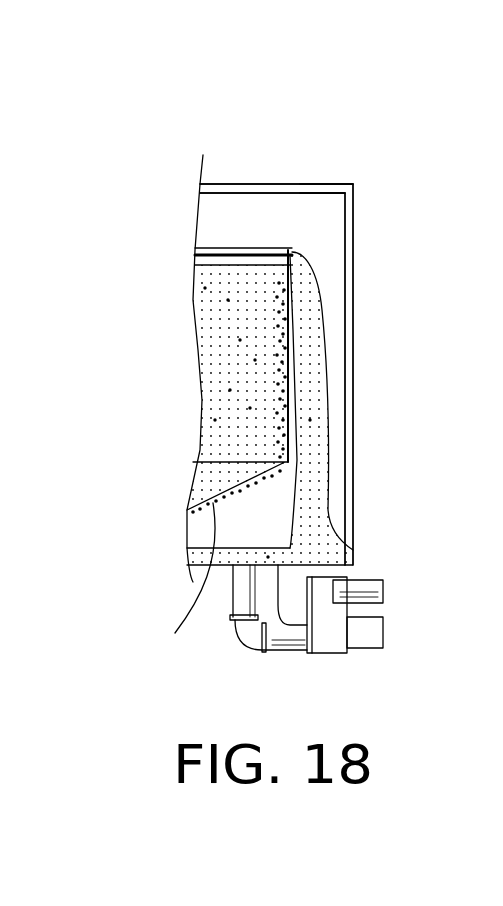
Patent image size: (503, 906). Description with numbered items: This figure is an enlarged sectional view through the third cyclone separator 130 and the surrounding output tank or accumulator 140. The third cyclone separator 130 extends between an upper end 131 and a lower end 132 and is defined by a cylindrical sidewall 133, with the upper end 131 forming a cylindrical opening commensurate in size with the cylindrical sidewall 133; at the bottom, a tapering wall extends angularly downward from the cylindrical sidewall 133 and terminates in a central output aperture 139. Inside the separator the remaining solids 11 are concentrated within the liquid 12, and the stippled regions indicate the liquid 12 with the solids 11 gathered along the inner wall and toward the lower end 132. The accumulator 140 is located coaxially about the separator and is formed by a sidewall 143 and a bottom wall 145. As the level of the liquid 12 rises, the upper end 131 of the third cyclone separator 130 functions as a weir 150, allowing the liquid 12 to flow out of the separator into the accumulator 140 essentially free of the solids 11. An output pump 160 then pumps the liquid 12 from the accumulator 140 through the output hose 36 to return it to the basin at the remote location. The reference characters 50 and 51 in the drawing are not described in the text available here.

The solids 11 is at (300, 382).
The liquid 12 is at (197, 322).
The output hose 36 is at (383, 583).
The lid 50 is at (231, 187).
The lid portion 51 is at (334, 184).
The third cyclone separator 130 is at (207, 247).
The upper end 131 is at (318, 292).
The lower end 132 is at (283, 443).
The cylindrical sidewall 133 is at (287, 276).
The central output aperture 139 is at (174, 584).
The accumulator 140 is at (353, 198).
The sidewall 143 is at (352, 418).
The bottom wall 145 is at (266, 640).
The weir 150 is at (238, 254).
The output pump 160 is at (358, 638).